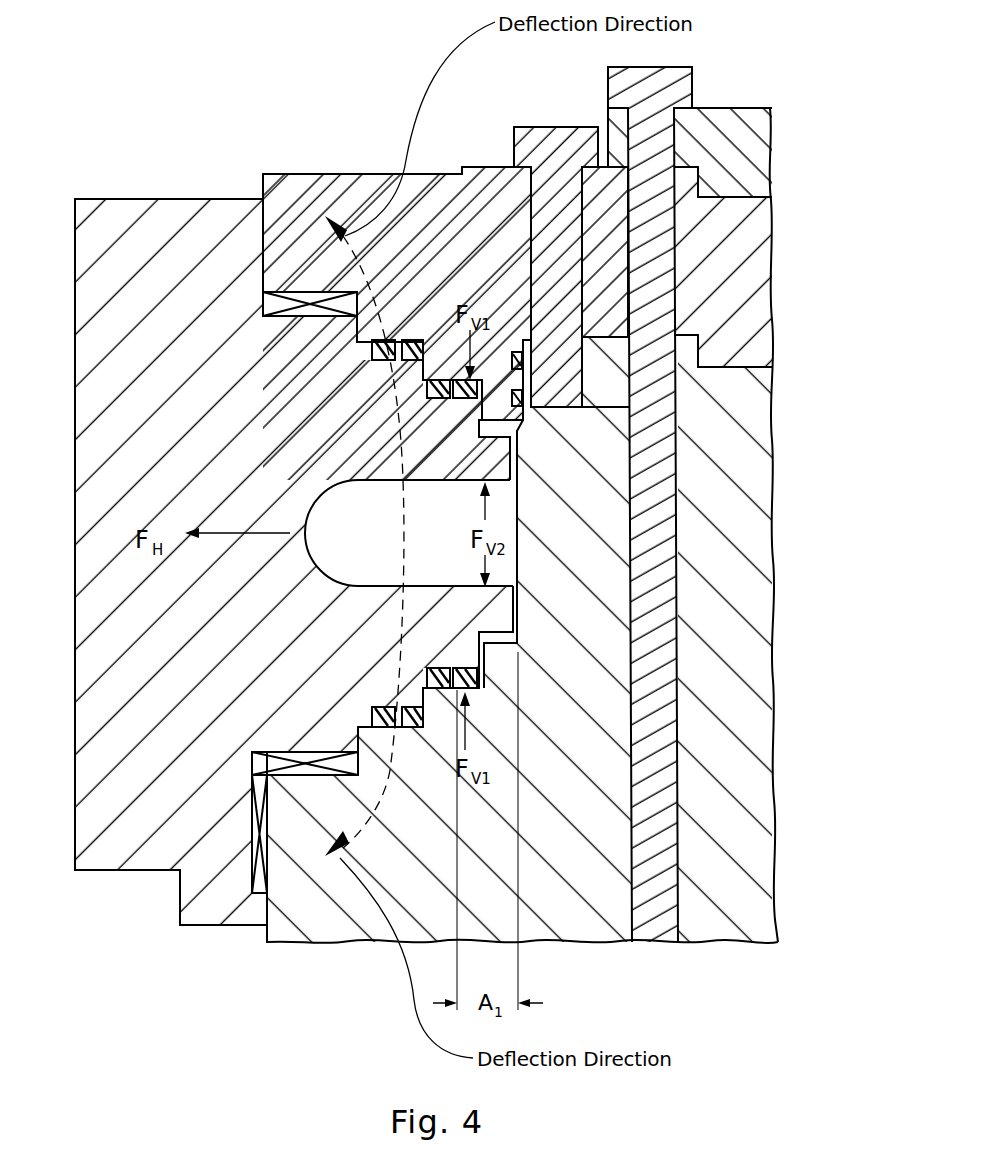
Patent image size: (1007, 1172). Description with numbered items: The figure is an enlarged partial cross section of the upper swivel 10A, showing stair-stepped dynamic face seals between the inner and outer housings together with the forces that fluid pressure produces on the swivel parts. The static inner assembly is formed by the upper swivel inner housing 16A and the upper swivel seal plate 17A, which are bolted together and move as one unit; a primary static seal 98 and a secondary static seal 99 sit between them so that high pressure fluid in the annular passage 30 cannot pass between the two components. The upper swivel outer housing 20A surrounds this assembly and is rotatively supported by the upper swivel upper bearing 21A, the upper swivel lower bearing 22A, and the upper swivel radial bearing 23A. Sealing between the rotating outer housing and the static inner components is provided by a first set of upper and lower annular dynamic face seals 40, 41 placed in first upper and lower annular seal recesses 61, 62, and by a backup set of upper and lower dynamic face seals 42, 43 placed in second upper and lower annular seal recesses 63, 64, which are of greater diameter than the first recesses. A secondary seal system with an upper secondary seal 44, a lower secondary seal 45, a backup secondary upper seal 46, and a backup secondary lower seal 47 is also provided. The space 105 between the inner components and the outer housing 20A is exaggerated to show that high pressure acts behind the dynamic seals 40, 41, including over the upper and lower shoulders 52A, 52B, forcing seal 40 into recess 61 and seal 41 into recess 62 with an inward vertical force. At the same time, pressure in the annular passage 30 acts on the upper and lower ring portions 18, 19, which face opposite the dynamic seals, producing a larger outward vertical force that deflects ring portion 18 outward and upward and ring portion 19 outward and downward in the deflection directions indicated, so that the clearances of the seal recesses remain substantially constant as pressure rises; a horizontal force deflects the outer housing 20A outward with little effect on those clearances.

The upper swivel 10A is at (166, 70).
The upper swivel outer housing 20A is at (136, 773).
The first upper annular seal recess 61 is at (432, 380).
The second upper annular seal recess 63 is at (460, 380).
The upper swivel upper bearing 21A is at (320, 312).
The backup secondary upper seal 46 is at (380, 360).
The upper secondary seal 44 is at (410, 360).
The backup upper dynamic face seal 42 is at (440, 400).
The upper annular dynamic face seal 40 is at (468, 400).
The annular passage 30 is at (290, 510).
The upper ring portion 18 is at (458, 490).
The lower ring portion 19 is at (455, 576).
The upper swivel lower bearing 22A is at (320, 752).
The lower annular dynamic face seal 41 is at (472, 668).
The backup lower dynamic face seal 43 is at (428, 668).
The lower secondary seal 45 is at (382, 707).
The backup secondary lower seal 47 is at (408, 707).
The upper swivel radial bearing 23A is at (258, 830).
The upper swivel inner housing 16A is at (755, 738).
The upper swivel seal plate 17A is at (722, 258).
The first lower annular seal recess 62 is at (482, 705).
The secondary static seal 99 is at (524, 358).
The primary static seal 98 is at (524, 396).
The upper shoulder 52A is at (500, 412).
The space 105 is at (500, 650).
The lower shoulder 52B is at (500, 664).
The second lower annular seal recess 64 is at (468, 946).